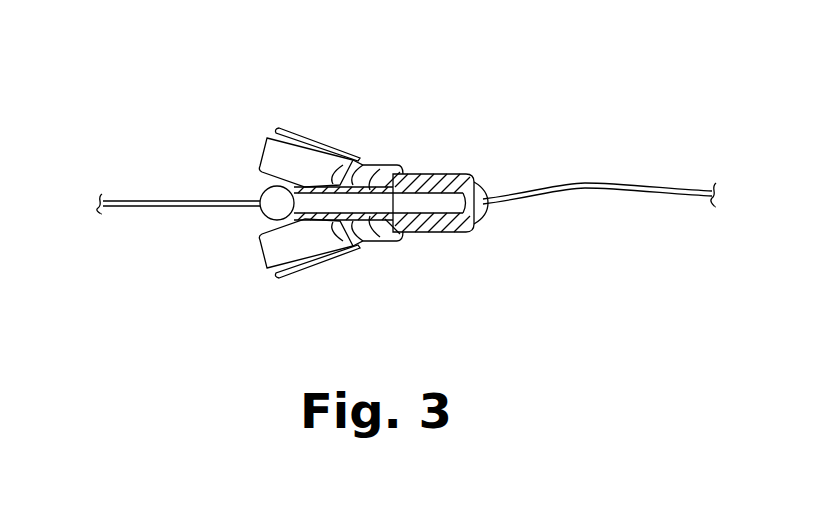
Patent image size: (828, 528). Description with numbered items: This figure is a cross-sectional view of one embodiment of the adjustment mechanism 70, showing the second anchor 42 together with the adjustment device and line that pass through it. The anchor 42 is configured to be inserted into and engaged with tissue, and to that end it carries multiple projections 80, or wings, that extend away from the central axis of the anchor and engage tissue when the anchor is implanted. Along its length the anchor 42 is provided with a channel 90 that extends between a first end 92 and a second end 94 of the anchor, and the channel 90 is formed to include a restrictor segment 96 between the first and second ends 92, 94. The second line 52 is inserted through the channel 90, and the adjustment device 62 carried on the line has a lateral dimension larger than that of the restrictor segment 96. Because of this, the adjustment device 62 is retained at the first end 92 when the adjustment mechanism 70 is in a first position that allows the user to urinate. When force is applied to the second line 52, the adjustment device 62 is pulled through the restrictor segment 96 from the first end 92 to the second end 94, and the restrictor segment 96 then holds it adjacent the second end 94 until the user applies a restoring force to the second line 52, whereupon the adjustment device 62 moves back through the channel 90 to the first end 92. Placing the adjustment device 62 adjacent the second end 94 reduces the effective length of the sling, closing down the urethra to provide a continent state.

The adjustment mechanism 70 is at (484, 58).
The second line 52 is at (178, 200).
The adjustment device 62 is at (264, 216).
The second anchor 42 is at (407, 173).
The projection 80 is at (266, 152).
The first end 92 is at (300, 232).
The restrictor segment 96 is at (392, 236).
The channel 90 is at (457, 234).
The second end 94 is at (483, 224).